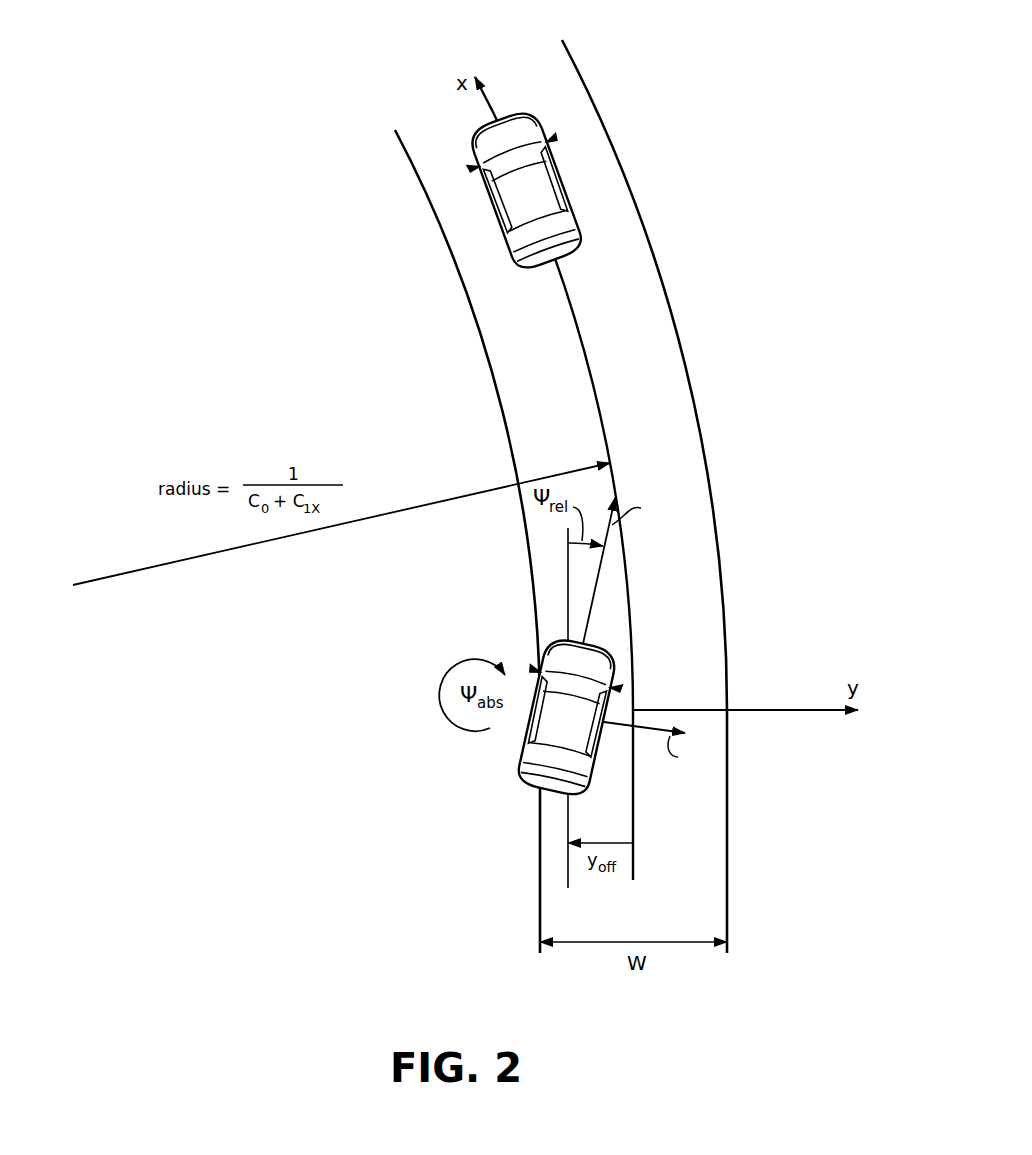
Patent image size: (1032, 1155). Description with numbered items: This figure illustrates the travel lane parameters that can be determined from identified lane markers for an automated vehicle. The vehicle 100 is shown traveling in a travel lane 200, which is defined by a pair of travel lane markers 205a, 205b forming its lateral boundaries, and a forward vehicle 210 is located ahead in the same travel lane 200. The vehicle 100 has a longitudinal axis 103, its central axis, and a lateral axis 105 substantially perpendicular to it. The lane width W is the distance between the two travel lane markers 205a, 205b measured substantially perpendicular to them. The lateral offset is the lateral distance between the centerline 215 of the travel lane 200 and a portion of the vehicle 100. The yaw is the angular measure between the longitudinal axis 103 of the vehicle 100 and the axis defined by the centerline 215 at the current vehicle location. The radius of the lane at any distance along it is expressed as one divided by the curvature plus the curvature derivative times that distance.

The vehicle 100 is at (523, 783).
The longitudinal axis 103 is at (600, 578).
The lateral axis 105 is at (621, 726).
The travel lane 200 is at (608, 496).
The travel lane marker 205a is at (717, 505).
The travel lane marker 205b is at (525, 542).
The forward vehicle 210 is at (478, 143).
The centerline 215 is at (598, 388).